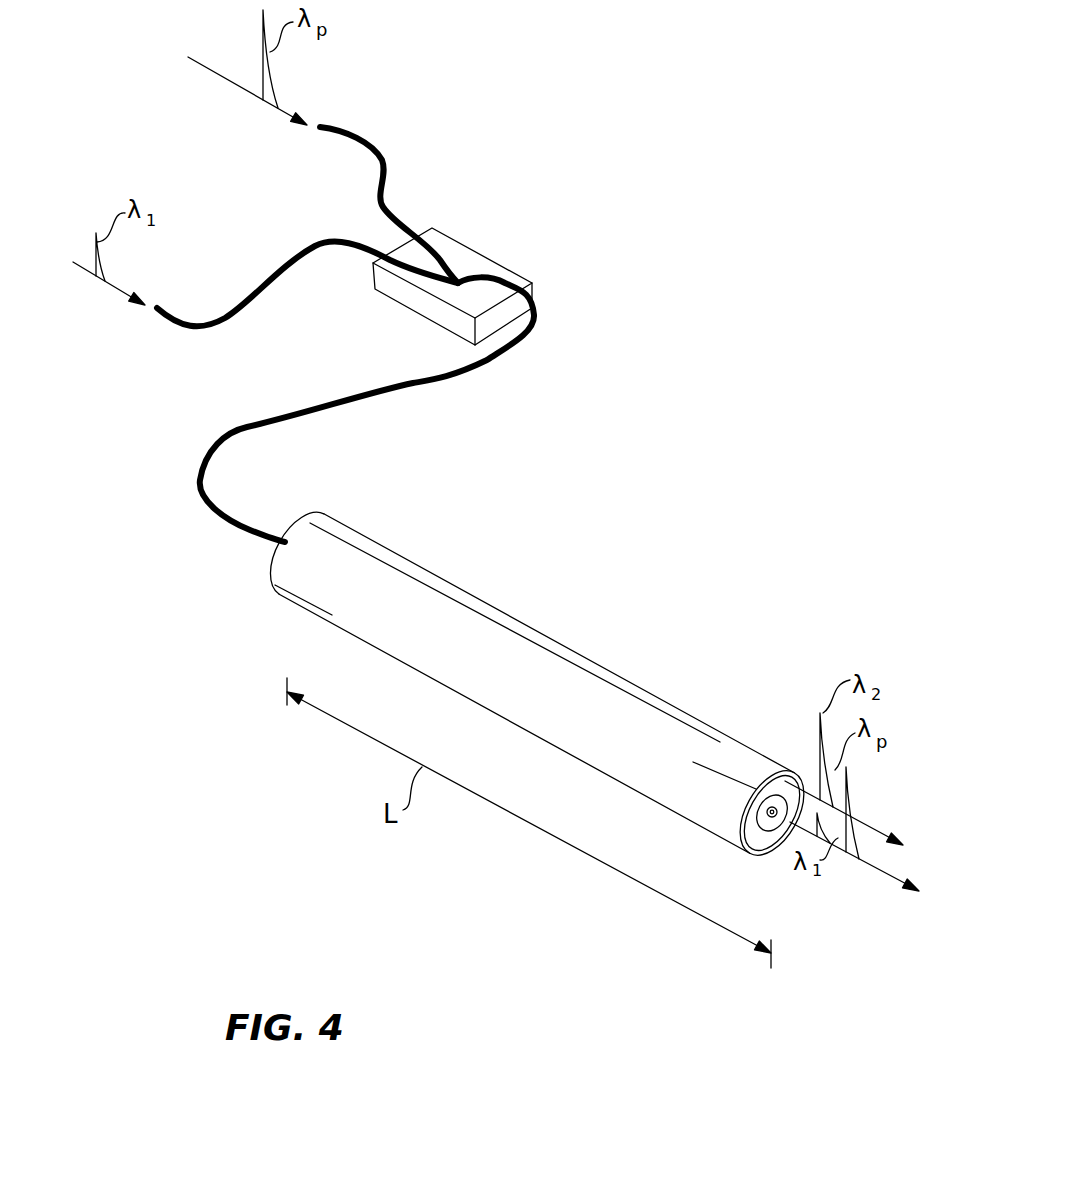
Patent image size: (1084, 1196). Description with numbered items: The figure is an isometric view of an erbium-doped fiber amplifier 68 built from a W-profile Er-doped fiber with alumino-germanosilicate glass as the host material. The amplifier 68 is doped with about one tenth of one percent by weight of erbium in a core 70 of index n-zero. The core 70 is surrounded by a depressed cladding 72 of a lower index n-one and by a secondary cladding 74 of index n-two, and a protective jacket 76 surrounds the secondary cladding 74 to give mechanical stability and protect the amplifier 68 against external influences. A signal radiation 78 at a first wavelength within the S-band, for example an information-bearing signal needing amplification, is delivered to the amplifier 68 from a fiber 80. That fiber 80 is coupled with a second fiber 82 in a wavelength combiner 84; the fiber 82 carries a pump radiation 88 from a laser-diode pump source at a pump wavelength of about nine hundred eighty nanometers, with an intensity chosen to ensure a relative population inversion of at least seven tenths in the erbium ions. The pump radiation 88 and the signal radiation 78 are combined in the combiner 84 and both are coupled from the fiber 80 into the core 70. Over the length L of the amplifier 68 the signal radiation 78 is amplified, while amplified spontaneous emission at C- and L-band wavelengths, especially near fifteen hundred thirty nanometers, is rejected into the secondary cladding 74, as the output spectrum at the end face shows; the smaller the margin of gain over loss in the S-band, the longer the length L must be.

The amplifier 68 is at (678, 702).
The core 70 is at (757, 820).
The depressed cladding 72 is at (752, 794).
The secondary cladding 74 is at (747, 850).
The protective jacket 76 is at (760, 852).
The signal radiation 78 is at (110, 287).
The fiber 80 is at (262, 292).
The fiber 82 is at (365, 140).
The wavelength combiner 84 is at (467, 242).
The pump radiation 88 is at (242, 90).